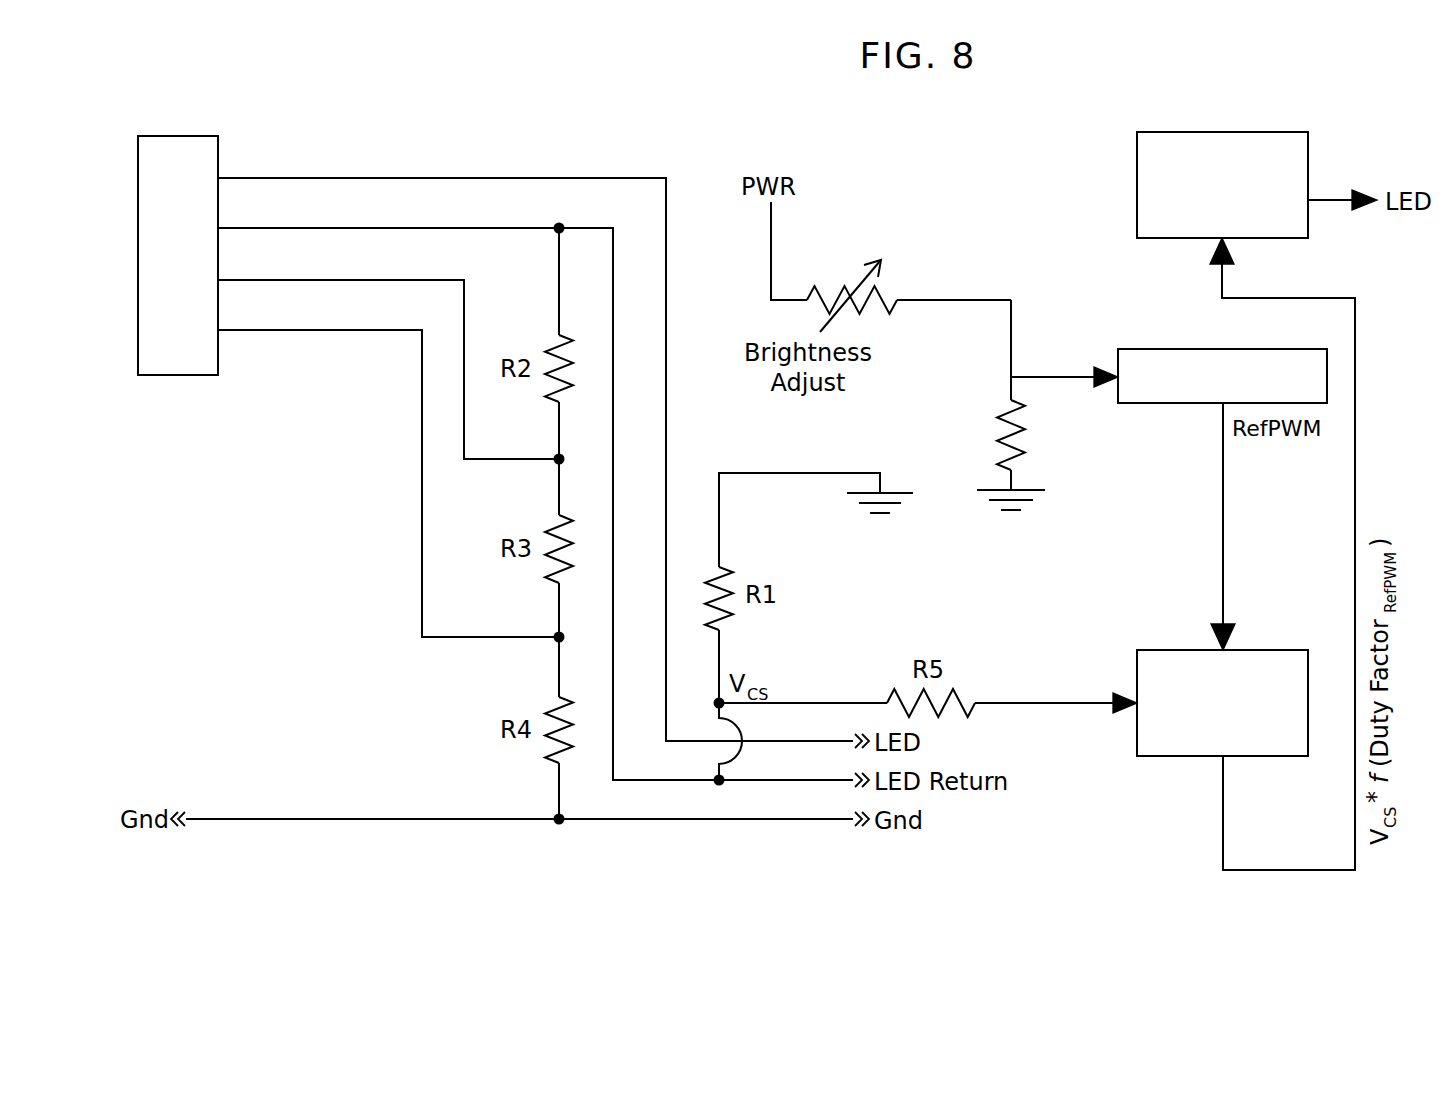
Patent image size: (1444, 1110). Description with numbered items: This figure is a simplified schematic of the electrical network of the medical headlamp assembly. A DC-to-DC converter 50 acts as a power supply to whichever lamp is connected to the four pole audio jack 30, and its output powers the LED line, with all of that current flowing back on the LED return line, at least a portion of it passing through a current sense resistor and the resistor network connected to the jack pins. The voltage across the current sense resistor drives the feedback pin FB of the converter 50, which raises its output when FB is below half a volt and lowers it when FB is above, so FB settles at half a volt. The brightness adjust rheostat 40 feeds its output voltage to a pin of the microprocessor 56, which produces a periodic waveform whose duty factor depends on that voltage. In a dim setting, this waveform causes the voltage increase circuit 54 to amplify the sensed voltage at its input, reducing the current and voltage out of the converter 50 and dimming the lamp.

The four pole audio jack 30 is at (250, 130).
The brightness adjust rheostat 40 is at (925, 258).
The DC-to-DC converter 50 is at (1209, 132).
The voltage increase circuit 54 is at (1272, 650).
The microprocessor 56 is at (1149, 349).